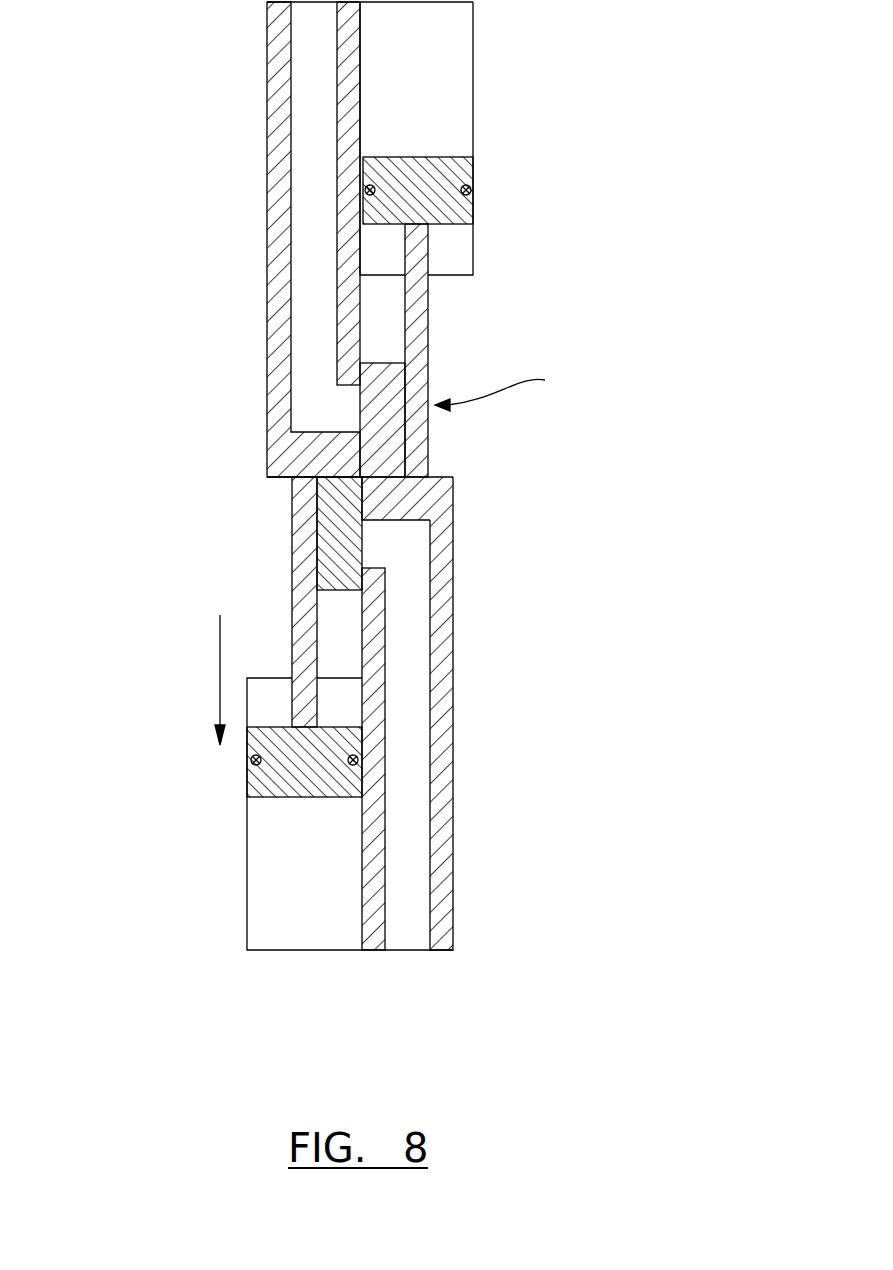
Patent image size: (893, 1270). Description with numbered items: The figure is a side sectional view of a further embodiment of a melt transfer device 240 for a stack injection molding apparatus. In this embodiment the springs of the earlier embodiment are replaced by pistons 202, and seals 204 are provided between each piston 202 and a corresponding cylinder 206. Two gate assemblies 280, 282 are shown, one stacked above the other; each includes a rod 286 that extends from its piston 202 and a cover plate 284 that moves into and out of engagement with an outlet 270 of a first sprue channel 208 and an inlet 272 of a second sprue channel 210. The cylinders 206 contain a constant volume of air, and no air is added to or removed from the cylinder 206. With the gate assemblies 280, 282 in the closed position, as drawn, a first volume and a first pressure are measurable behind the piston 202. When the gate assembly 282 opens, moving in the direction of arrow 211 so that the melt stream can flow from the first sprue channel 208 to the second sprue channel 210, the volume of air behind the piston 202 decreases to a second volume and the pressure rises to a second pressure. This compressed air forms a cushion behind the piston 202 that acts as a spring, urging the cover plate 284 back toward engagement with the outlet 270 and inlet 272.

The piston 202 is at (473, 218).
The seal 204 is at (473, 185).
The cylinder 206 is at (473, 45).
The first sprue channel 208 is at (323, 98).
The second sprue channel 210 is at (408, 843).
The arrow 211 is at (220, 680).
The melt transfer device 240 is at (140, 997).
The outlet 270 is at (360, 407).
The inlet 272 is at (362, 550).
The gate assembly 280 is at (523, 389).
The gate assembly 282 is at (347, 598).
The cover plate 284 is at (428, 433).
The rod 286 is at (430, 335).